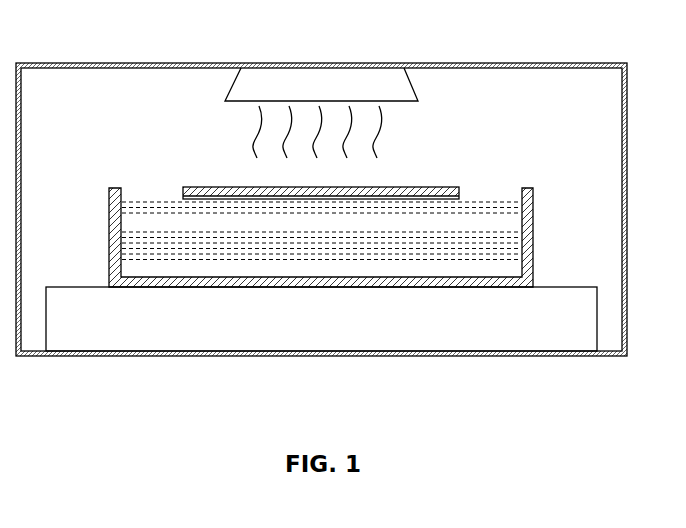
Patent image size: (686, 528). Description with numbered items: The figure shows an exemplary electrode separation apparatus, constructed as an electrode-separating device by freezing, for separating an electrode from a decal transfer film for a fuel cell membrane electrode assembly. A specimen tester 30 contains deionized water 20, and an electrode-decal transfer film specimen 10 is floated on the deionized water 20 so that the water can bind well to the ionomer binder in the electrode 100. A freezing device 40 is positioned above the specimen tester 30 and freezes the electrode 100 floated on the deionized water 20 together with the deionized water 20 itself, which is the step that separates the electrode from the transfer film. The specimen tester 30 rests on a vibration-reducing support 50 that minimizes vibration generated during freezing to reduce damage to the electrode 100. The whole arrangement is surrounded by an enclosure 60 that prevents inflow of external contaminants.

The electrode-decal transfer film specimen 10 is at (336, 157).
The electrode 100 is at (413, 198).
The deionized water 20 is at (478, 264).
The specimen tester 30 is at (191, 282).
The freezing device 40 is at (312, 80).
The vibration-reducing support 50 is at (298, 322).
The enclosure 60 is at (143, 63).